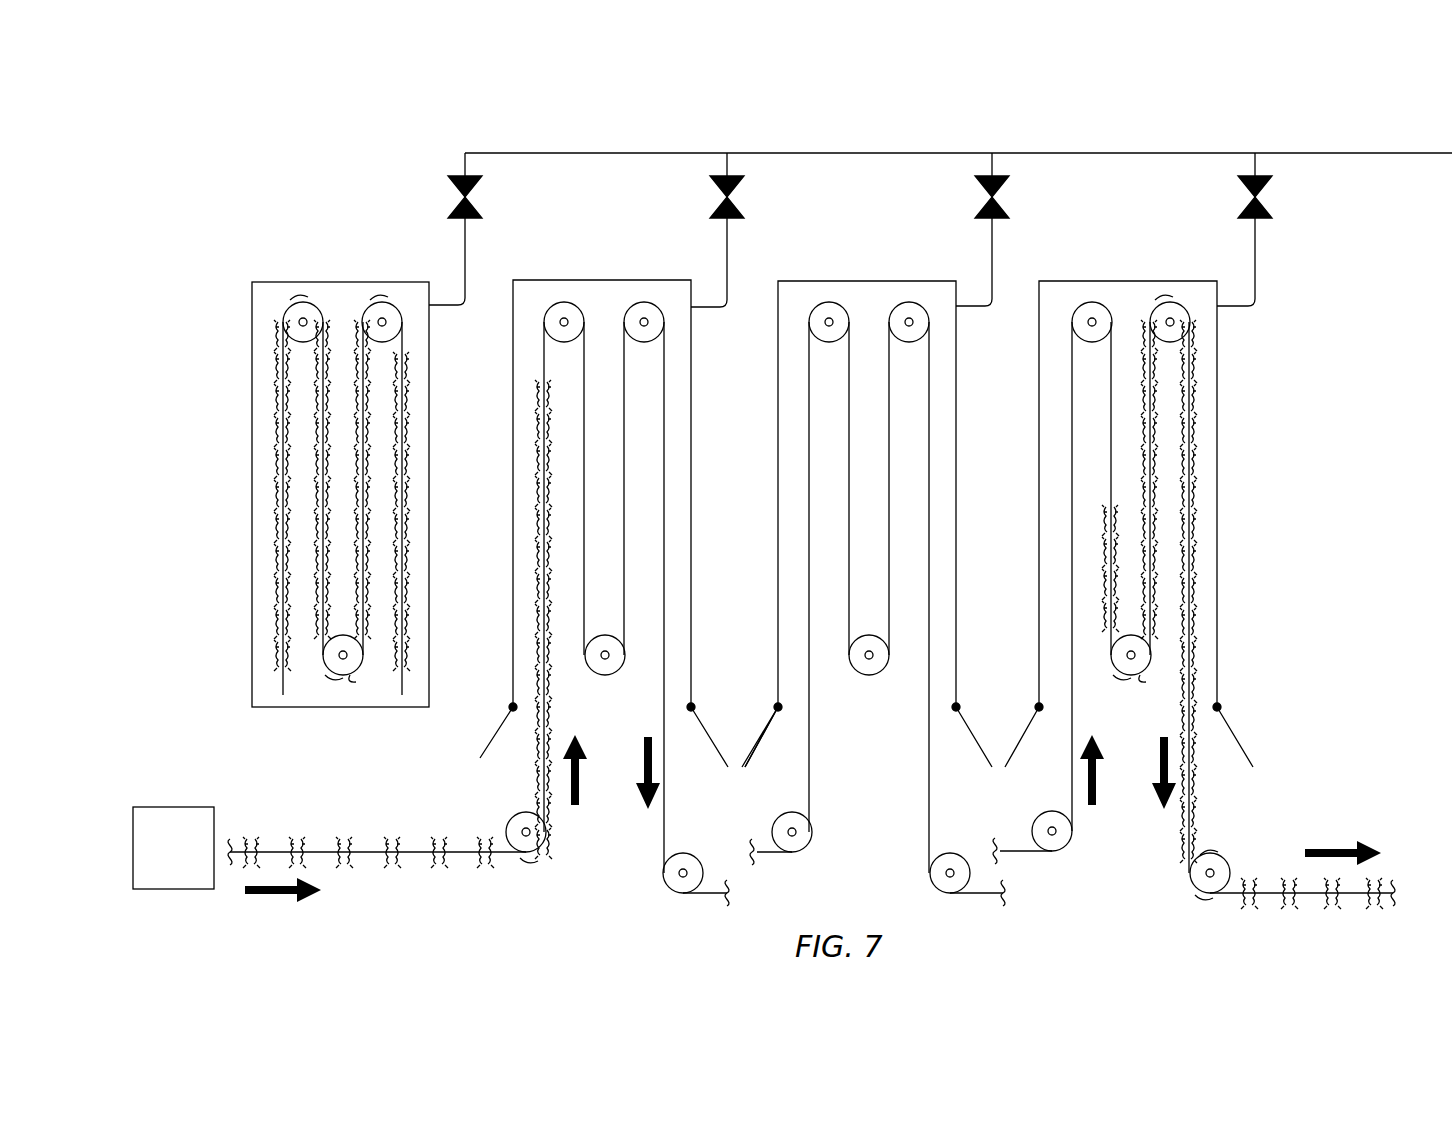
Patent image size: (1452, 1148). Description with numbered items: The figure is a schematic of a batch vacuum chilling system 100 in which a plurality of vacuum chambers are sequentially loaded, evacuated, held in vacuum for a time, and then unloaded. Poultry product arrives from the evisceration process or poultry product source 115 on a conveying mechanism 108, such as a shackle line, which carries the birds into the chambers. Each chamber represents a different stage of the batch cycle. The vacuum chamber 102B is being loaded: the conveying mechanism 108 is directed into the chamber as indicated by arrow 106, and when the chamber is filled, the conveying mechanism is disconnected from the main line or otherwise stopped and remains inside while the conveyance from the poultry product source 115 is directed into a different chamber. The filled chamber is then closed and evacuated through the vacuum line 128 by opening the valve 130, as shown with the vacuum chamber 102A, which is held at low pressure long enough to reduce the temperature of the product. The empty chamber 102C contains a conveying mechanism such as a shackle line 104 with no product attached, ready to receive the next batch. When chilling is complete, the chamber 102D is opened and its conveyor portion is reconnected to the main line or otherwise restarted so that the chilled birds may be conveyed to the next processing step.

The batch vacuum chilling system 100 is at (837, 95).
The vacuum chamber 102A is at (278, 258).
The vacuum chamber 102B is at (659, 256).
The empty chamber 102C is at (917, 256).
The chamber 102D is at (1174, 256).
The shackle line 104 is at (782, 772).
The arrow 106 is at (578, 778).
The conveying mechanism 108 is at (522, 642).
The poultry product source 115 is at (173, 848).
The vacuum line 128 is at (464, 247).
The valve 130 is at (447, 187).